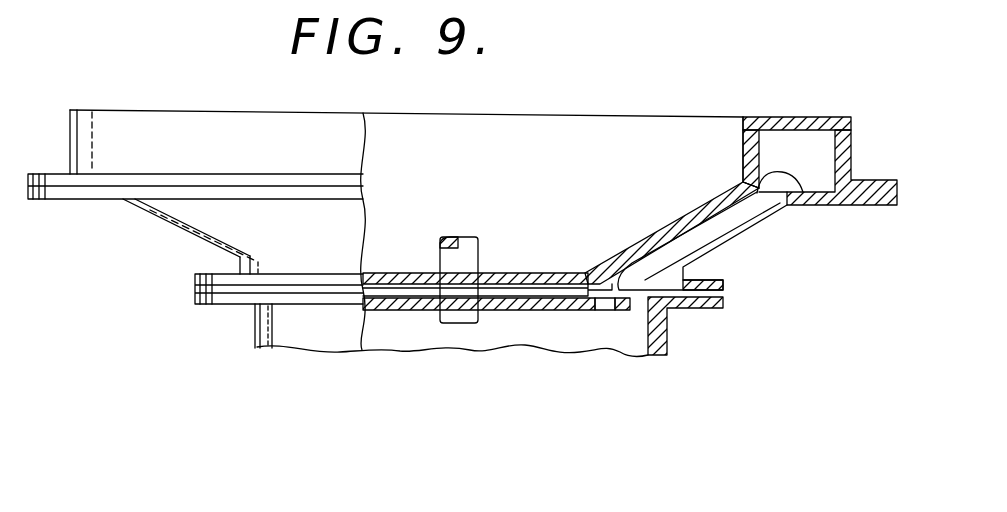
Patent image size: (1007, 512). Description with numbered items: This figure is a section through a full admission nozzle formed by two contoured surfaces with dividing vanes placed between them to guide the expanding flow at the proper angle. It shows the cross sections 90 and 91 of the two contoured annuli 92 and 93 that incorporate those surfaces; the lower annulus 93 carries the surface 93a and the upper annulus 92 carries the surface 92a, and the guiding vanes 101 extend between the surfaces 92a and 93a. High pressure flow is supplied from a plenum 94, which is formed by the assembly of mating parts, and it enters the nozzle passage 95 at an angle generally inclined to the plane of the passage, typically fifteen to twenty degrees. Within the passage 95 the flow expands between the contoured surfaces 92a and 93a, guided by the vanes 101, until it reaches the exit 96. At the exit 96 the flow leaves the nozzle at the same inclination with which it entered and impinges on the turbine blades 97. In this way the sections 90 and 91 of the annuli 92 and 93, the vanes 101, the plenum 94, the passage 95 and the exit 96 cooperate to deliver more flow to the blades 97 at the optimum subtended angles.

The cross section 90 is at (640, 242).
The cross section 91 is at (715, 240).
The contoured annulus 92 is at (205, 106).
The surface 92a is at (772, 122).
The contoured annulus 93 is at (176, 224).
The surface 93a is at (801, 194).
The plenum 94 is at (810, 148).
The nozzle passage 95 is at (742, 181).
The exit 96 is at (598, 272).
The turbine blades 97 is at (607, 312).
The guiding vanes 101 is at (706, 204).